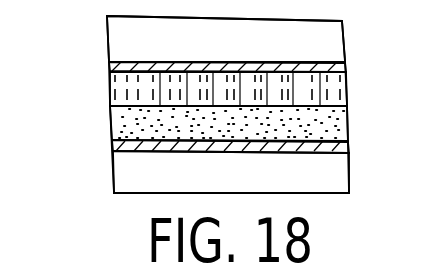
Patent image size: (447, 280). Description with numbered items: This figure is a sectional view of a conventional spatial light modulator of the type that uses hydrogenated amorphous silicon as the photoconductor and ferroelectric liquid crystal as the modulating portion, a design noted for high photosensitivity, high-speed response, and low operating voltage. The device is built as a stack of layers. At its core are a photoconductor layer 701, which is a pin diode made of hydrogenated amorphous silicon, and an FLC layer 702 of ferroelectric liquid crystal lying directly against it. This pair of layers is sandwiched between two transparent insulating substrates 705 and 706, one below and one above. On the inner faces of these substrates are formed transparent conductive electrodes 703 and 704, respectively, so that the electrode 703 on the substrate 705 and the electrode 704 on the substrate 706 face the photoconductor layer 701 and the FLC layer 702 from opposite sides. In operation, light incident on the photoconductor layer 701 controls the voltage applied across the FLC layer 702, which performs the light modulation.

The photoconductor layer 701 is at (342, 123).
The FLC layer 702 is at (341, 93).
The transparent conductive electrode 703 is at (120, 146).
The transparent conductive electrode 704 is at (110, 68).
The transparent insulating substrate 705 is at (340, 170).
The transparent insulating substrate 706 is at (343, 43).